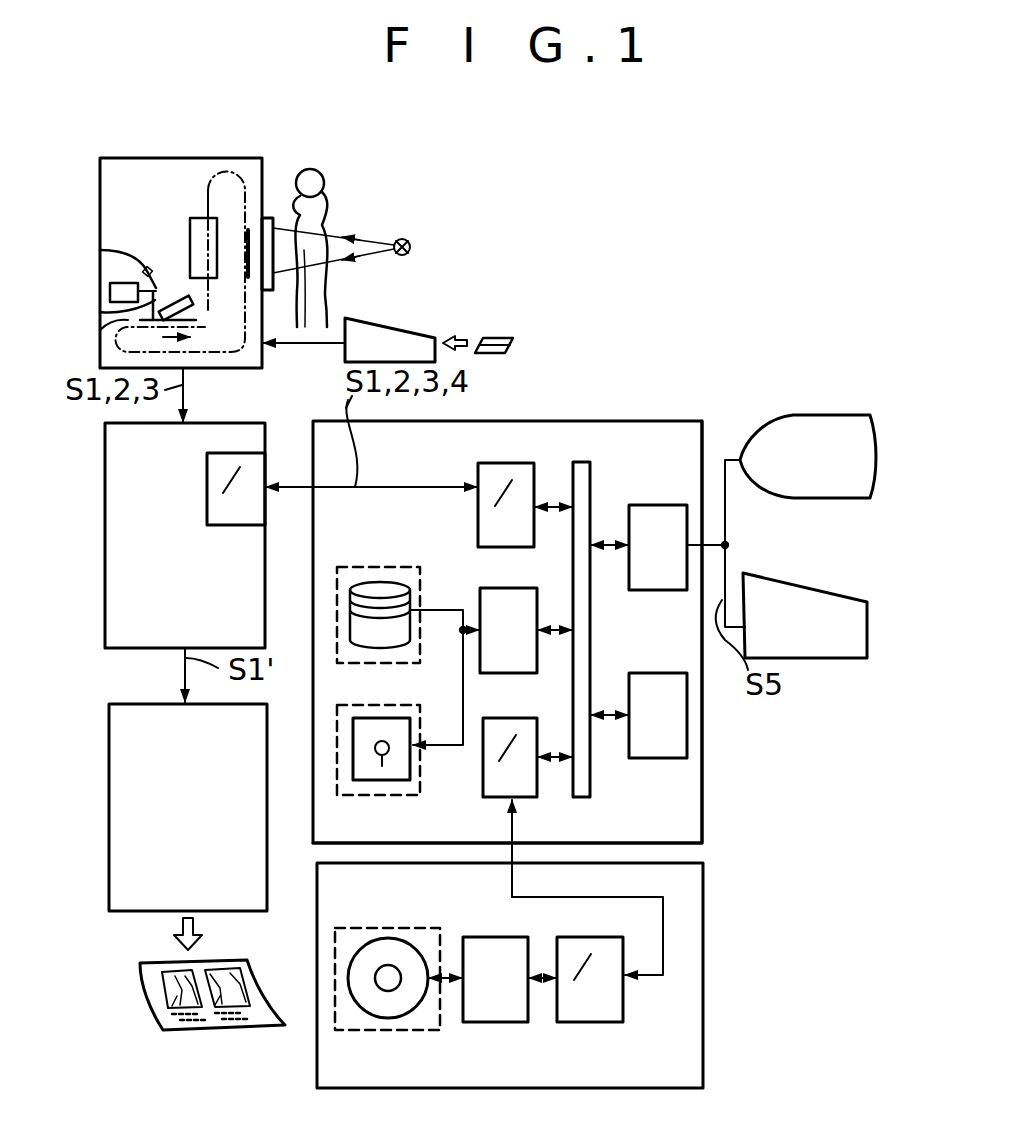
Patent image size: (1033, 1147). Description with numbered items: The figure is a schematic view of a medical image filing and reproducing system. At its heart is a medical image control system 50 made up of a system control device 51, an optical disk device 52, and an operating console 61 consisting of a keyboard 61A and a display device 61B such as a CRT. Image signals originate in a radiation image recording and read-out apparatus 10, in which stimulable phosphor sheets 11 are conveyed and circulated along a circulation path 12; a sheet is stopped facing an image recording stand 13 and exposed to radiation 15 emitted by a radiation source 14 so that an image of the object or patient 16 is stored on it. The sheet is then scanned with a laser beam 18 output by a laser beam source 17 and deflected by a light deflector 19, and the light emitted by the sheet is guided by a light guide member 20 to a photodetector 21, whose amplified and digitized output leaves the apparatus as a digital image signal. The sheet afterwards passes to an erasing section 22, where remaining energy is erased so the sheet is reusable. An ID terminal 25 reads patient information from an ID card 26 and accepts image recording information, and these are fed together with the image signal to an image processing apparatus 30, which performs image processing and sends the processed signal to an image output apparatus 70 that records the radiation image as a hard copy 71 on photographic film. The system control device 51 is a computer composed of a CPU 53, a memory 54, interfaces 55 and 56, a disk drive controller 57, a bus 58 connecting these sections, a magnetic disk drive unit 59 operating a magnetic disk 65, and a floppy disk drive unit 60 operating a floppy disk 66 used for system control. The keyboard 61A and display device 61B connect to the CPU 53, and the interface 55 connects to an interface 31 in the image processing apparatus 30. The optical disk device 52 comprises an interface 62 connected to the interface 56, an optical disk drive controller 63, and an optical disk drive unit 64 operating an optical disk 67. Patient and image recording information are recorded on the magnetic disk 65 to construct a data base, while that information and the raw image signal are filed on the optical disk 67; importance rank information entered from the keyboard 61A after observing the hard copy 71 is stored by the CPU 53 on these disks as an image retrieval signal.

The radiation image recording and read-out apparatus 10 is at (203, 150).
The stimulable phosphor sheet 11 is at (110, 325).
The circulation path 12 is at (204, 200).
The image recording stand 13 is at (272, 215).
The radiation source 14 is at (411, 243).
The radiation 15 is at (366, 242).
The object (patient) 16 is at (326, 183).
The laser beam source 17 is at (122, 282).
The laser beam 18 is at (106, 308).
The light deflector 19 is at (108, 253).
The light guide member 20 is at (173, 303).
The photodetector 21 is at (194, 306).
The erasing section 22 is at (190, 230).
The ID terminal 25 is at (420, 326).
The ID card 26 is at (505, 335).
The image processing apparatus 30 is at (100, 538).
The interface 31 is at (257, 507).
The medical image control system 50 is at (649, 412).
The system control device 51 is at (702, 812).
The optical disk device 52 is at (703, 1040).
The central processing unit (CPU) 53 is at (651, 505).
The memory 54 is at (652, 673).
The interface 55 is at (490, 462).
The interface 56 is at (537, 788).
The disk drive controller 57 is at (537, 658).
The bus 58 is at (589, 470).
The magnetic disk drive unit 59 is at (400, 606).
The floppy disk drive unit 60 is at (401, 773).
The operating console 61 is at (820, 536).
The keyboard 61A is at (783, 580).
The display device 61B is at (790, 483).
The interface 62 is at (595, 1022).
The optical disk drive controller 63 is at (510, 1022).
The optical disk drive unit 64 is at (401, 951).
The magnetic disk 65 is at (396, 638).
The floppy disk 66 is at (365, 768).
The optical disk 67 is at (368, 936).
The image output apparatus 70 is at (103, 780).
The hard copy 71 is at (152, 1018).